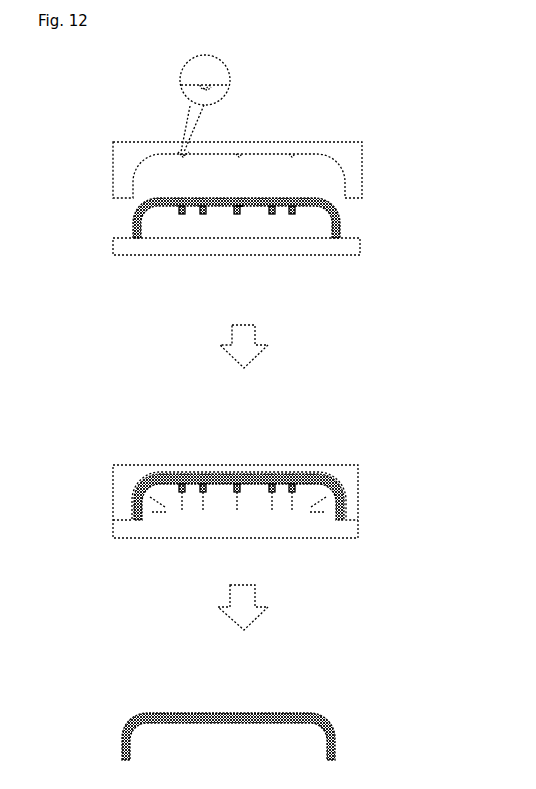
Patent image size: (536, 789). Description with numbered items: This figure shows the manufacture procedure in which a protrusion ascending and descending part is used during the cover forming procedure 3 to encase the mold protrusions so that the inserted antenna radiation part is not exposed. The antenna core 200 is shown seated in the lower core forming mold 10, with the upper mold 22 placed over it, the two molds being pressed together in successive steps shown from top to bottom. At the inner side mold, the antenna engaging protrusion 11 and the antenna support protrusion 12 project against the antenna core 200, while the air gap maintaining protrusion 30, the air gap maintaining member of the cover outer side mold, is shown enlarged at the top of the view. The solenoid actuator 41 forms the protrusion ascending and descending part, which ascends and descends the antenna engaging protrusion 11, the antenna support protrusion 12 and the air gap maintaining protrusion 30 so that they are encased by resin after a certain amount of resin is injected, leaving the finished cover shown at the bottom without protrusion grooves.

The cover forming procedure 3 is at (330, 77).
The core forming mold 10 is at (115, 237).
The upper mold 22 is at (110, 141).
The air gap maintaining protrusion 30 is at (222, 98).
The antenna support protrusion 12 is at (240, 200).
The antenna engaging protrusion 11 is at (272, 200).
The solenoid actuator 41 is at (241, 211).
The antenna core 200 is at (343, 211).